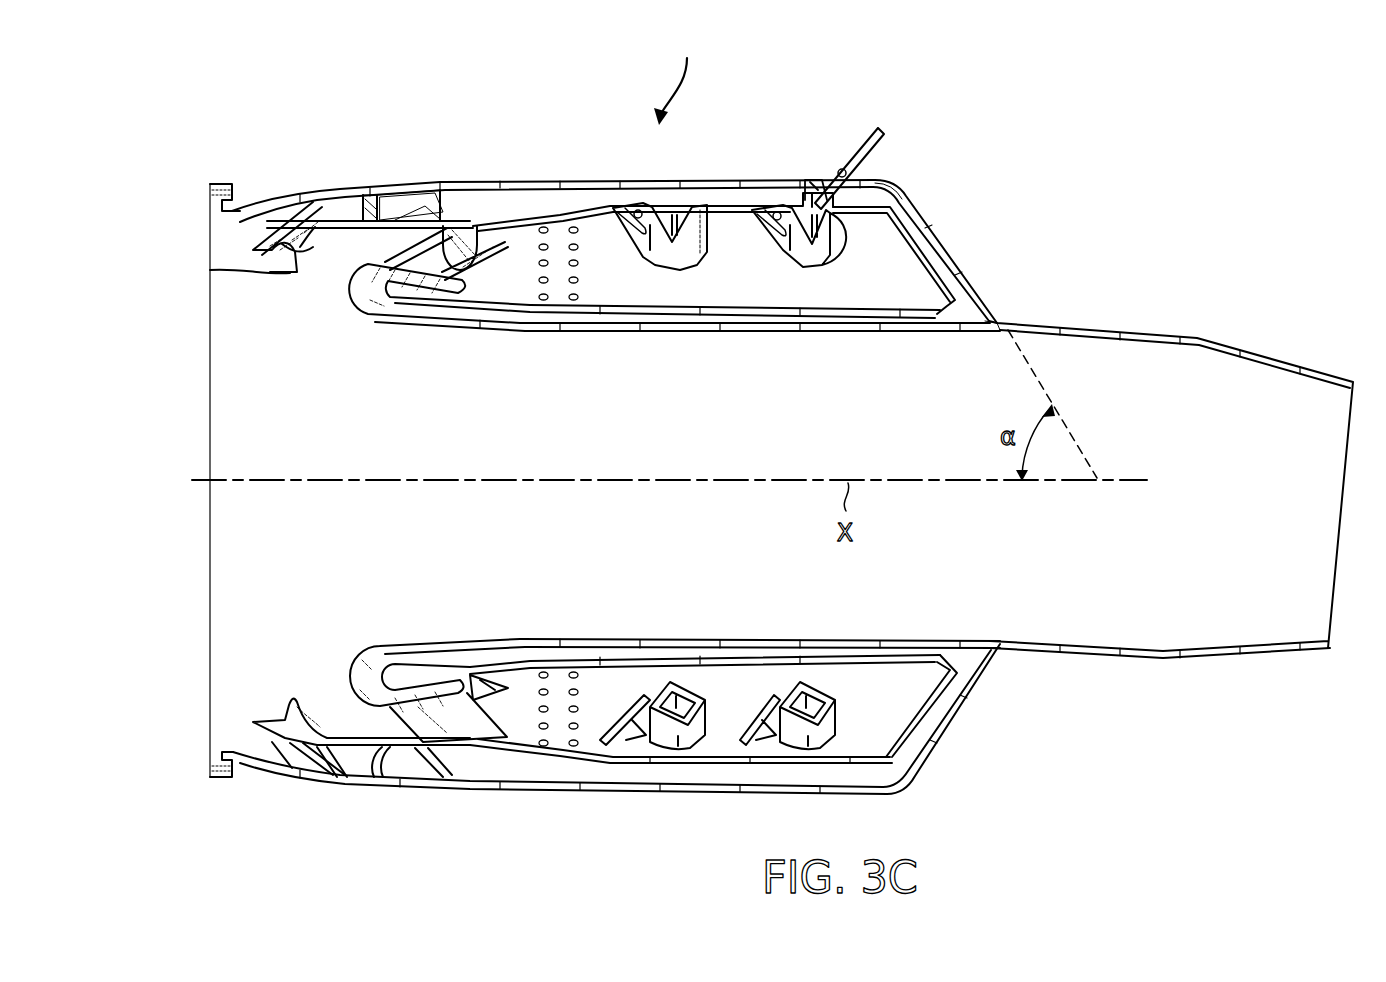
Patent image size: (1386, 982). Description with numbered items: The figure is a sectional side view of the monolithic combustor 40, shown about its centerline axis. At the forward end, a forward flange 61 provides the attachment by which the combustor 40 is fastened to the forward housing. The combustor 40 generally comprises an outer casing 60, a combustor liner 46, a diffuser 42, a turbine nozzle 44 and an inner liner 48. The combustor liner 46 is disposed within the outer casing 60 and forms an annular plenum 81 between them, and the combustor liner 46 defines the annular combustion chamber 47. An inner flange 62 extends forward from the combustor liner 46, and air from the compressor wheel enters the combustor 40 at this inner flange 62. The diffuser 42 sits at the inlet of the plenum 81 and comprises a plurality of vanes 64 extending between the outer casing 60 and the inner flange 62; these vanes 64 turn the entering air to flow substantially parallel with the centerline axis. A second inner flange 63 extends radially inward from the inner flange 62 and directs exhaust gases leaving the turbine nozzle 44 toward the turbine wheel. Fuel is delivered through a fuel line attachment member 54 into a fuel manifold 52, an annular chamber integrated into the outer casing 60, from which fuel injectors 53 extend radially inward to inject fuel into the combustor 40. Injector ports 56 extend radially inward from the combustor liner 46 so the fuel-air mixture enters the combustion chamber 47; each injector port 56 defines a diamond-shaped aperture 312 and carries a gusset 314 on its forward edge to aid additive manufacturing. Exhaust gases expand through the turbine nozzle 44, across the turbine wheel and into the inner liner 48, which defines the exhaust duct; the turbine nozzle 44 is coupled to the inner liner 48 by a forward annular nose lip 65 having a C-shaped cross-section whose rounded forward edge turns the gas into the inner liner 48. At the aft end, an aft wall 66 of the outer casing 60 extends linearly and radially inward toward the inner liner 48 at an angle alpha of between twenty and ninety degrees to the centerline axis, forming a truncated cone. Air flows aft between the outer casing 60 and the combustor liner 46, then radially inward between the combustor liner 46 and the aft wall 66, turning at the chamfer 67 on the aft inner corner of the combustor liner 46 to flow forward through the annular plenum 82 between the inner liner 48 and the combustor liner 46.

The combustor 40 is at (675, 75).
The diffuser 42 is at (373, 207).
The turbine nozzle 44 is at (463, 243).
The combustor liner 46 is at (875, 200).
The combustion chamber 47 is at (735, 240).
The inner liner 48 is at (872, 322).
The fuel manifold 52 is at (825, 190).
The fuel injector 53 is at (837, 208).
The fuel line attachment member 54 is at (877, 123).
The injector port 56 is at (808, 262).
The outer casing 60 is at (700, 180).
The forward flange 61 is at (225, 183).
The inner flange 62 is at (268, 240).
The inner flange 63 is at (210, 270).
The vanes 64 is at (330, 207).
The forward annular nose lip 65 is at (343, 290).
The aft wall 66 is at (980, 293).
The chamfer 67 is at (957, 323).
The annular plenum 81 is at (457, 197).
The annular plenum 82 is at (672, 325).
The diamond-shaped aperture 312 is at (803, 710).
The gusset 314 is at (640, 725).